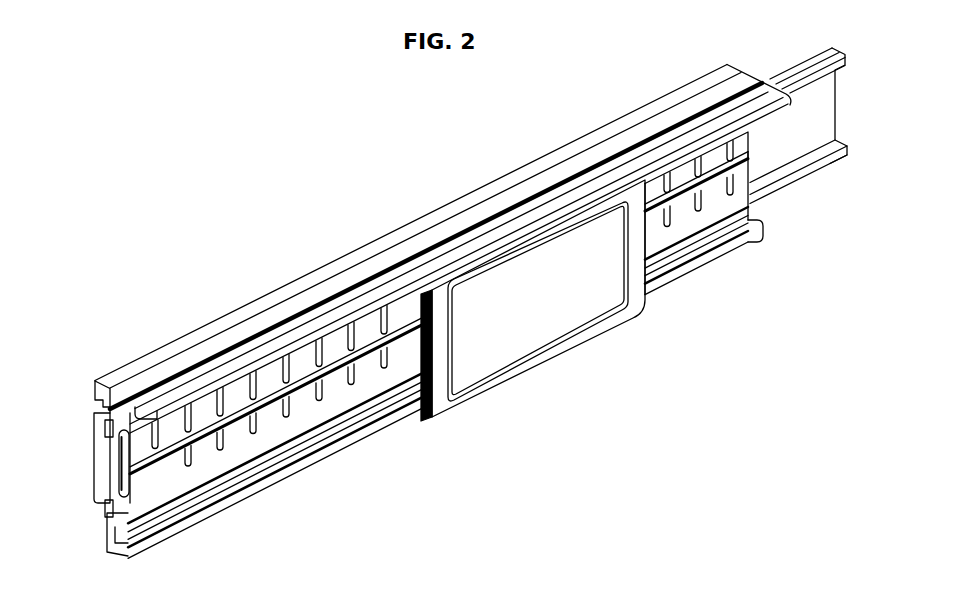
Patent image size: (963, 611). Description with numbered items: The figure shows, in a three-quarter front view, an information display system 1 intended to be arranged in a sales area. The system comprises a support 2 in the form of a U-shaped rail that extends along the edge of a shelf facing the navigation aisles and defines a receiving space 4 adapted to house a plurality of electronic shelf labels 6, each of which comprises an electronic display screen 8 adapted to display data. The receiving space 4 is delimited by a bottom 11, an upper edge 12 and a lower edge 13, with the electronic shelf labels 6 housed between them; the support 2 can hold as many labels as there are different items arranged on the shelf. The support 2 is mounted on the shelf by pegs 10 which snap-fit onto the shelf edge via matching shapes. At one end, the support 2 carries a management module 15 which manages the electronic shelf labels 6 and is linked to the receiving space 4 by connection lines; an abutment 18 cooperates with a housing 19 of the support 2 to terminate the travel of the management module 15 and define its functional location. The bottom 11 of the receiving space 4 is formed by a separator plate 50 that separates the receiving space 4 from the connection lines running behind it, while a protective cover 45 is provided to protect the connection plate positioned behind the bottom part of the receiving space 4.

The information display system 1 is at (401, 182).
The support 2 is at (716, 90).
The receiving space 4 is at (716, 207).
The electronic shelf label 6 is at (514, 372).
The electronic display screen 8 is at (545, 316).
The peg 10 is at (92, 389).
The bottom 11 is at (348, 405).
The upper edge 12 is at (232, 360).
The lower edge 13 is at (312, 453).
The management module 15 is at (82, 457).
The abutment 18 is at (118, 476).
The housing 19 is at (130, 447).
The protective cover 45 is at (804, 69).
The separator plate 50 is at (199, 472).